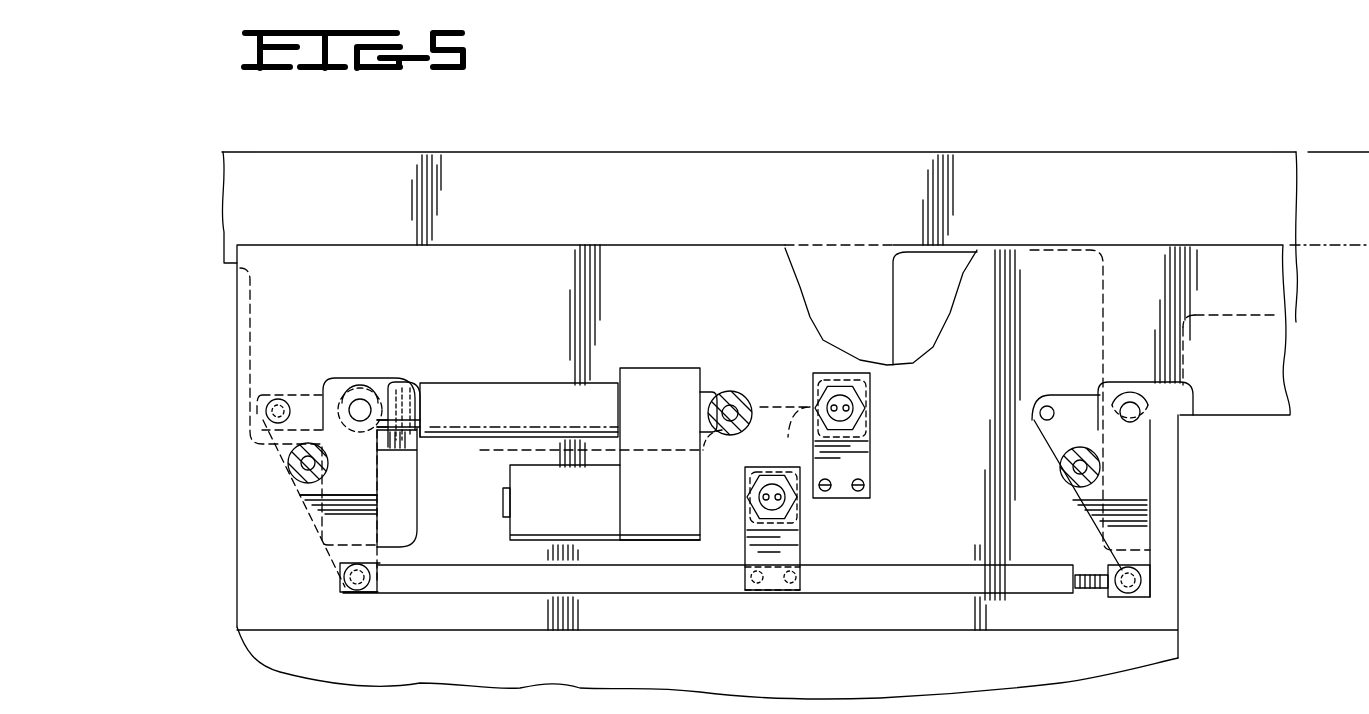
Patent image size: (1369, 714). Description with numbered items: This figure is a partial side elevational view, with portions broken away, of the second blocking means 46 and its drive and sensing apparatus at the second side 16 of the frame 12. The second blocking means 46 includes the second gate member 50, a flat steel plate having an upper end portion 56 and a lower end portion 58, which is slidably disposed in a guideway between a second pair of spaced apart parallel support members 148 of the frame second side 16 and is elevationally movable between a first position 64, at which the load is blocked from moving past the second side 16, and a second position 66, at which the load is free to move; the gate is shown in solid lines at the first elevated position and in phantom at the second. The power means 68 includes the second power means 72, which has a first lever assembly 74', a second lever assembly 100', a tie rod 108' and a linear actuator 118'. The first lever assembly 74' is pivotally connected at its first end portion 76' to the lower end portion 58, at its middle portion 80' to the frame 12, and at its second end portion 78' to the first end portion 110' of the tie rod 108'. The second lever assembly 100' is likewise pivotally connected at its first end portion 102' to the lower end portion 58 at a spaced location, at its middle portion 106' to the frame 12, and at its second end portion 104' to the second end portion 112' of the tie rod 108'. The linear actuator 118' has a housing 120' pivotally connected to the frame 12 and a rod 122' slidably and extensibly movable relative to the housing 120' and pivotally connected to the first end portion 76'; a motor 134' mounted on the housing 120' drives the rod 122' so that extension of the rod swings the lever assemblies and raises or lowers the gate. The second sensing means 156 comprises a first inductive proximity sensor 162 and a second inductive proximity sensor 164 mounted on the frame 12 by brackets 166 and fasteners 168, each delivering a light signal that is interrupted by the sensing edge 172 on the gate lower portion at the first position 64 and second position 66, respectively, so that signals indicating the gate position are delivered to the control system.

The frame 12 is at (705, 249).
The second side 16 is at (862, 245).
The second means for blocking movement 46 is at (846, 154).
The second gate member 50 is at (557, 200).
The upper end portion 56 is at (990, 182).
The lower end portion 58 is at (405, 440).
The first position 64 is at (1335, 152).
The second position 66 is at (1346, 245).
The power means 68 is at (407, 314).
The second power means 72 is at (680, 343).
The first lever assembly 74' is at (308, 491).
The first end portion 76' is at (340, 386).
The second end portion 78' is at (322, 577).
The middle portion 80' is at (299, 459).
The second lever assembly 100' is at (1149, 410).
The first end portion 102' is at (1175, 414).
The second end portion 104' is at (1184, 578).
The middle portion 106' is at (1147, 459).
The tie rod 108' is at (708, 595).
The first end portion 110' is at (347, 593).
The second end portion 112' is at (1101, 599).
The linear actuator 118' is at (560, 382).
The housing 120' is at (688, 441).
The rod 122' is at (424, 394).
The motor 134' is at (601, 502).
The support members 148 is at (242, 330).
The second sensing means 156 is at (872, 540).
The first inductive proximity sensor 162 is at (852, 412).
The second inductive proximity sensor 164 is at (790, 505).
The brackets 166 is at (872, 455).
The fasteners 168 is at (828, 494).
The sensing edge 172 is at (788, 437).